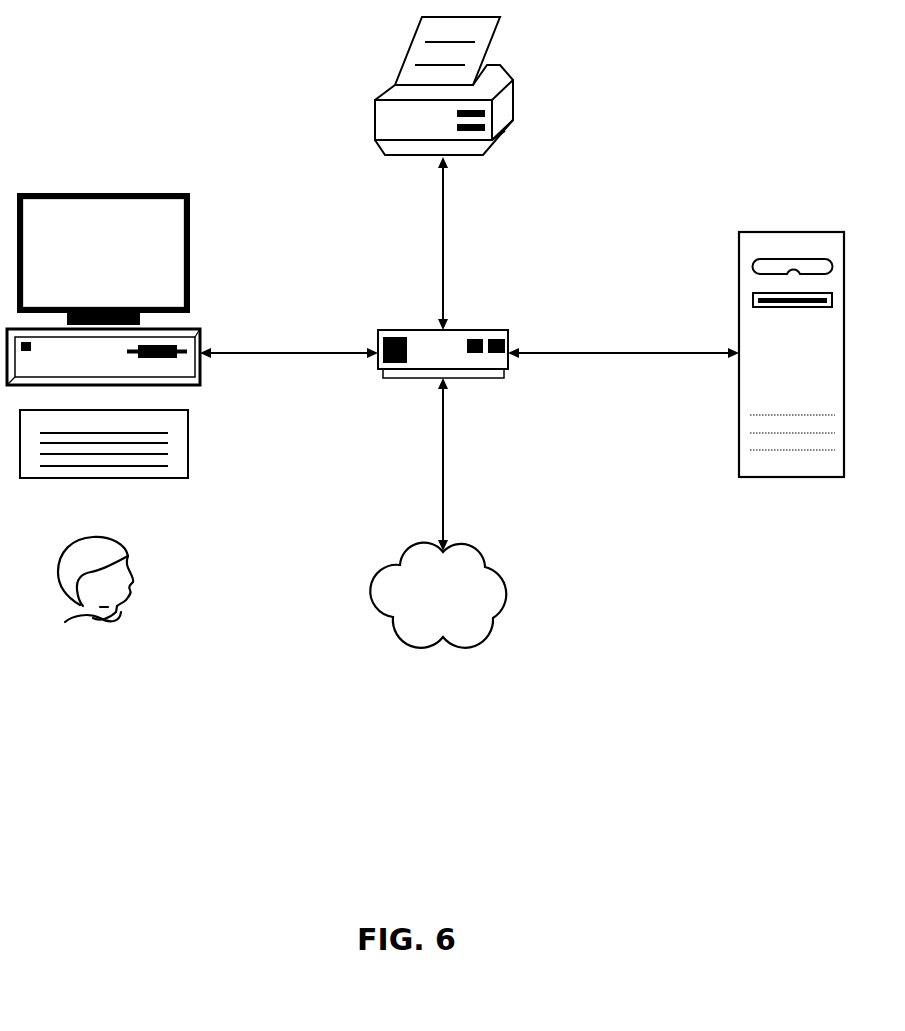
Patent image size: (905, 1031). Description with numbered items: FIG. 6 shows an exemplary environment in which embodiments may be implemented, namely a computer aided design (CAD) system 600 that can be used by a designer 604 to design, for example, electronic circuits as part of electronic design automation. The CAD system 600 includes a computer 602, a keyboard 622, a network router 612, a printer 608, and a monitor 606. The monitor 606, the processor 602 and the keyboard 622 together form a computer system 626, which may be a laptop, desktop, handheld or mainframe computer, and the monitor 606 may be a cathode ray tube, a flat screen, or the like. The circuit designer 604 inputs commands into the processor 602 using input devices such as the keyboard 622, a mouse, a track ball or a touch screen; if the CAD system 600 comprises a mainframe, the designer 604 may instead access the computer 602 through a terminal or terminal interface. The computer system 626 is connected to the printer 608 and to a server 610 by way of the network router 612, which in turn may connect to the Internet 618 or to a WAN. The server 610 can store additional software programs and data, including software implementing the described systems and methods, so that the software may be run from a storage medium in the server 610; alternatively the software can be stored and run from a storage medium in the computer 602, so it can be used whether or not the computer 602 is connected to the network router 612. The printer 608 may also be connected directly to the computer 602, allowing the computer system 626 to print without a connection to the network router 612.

The computer aided design (CAD) system 600 is at (724, 93).
The computer 602 is at (197, 333).
The designer 604 is at (123, 542).
The monitor 606 is at (182, 194).
The printer 608 is at (372, 127).
The server 610 is at (739, 459).
The network router 612 is at (470, 330).
The Internet 618 is at (476, 548).
The keyboard 622 is at (188, 442).
The computer system 626 is at (191, 249).